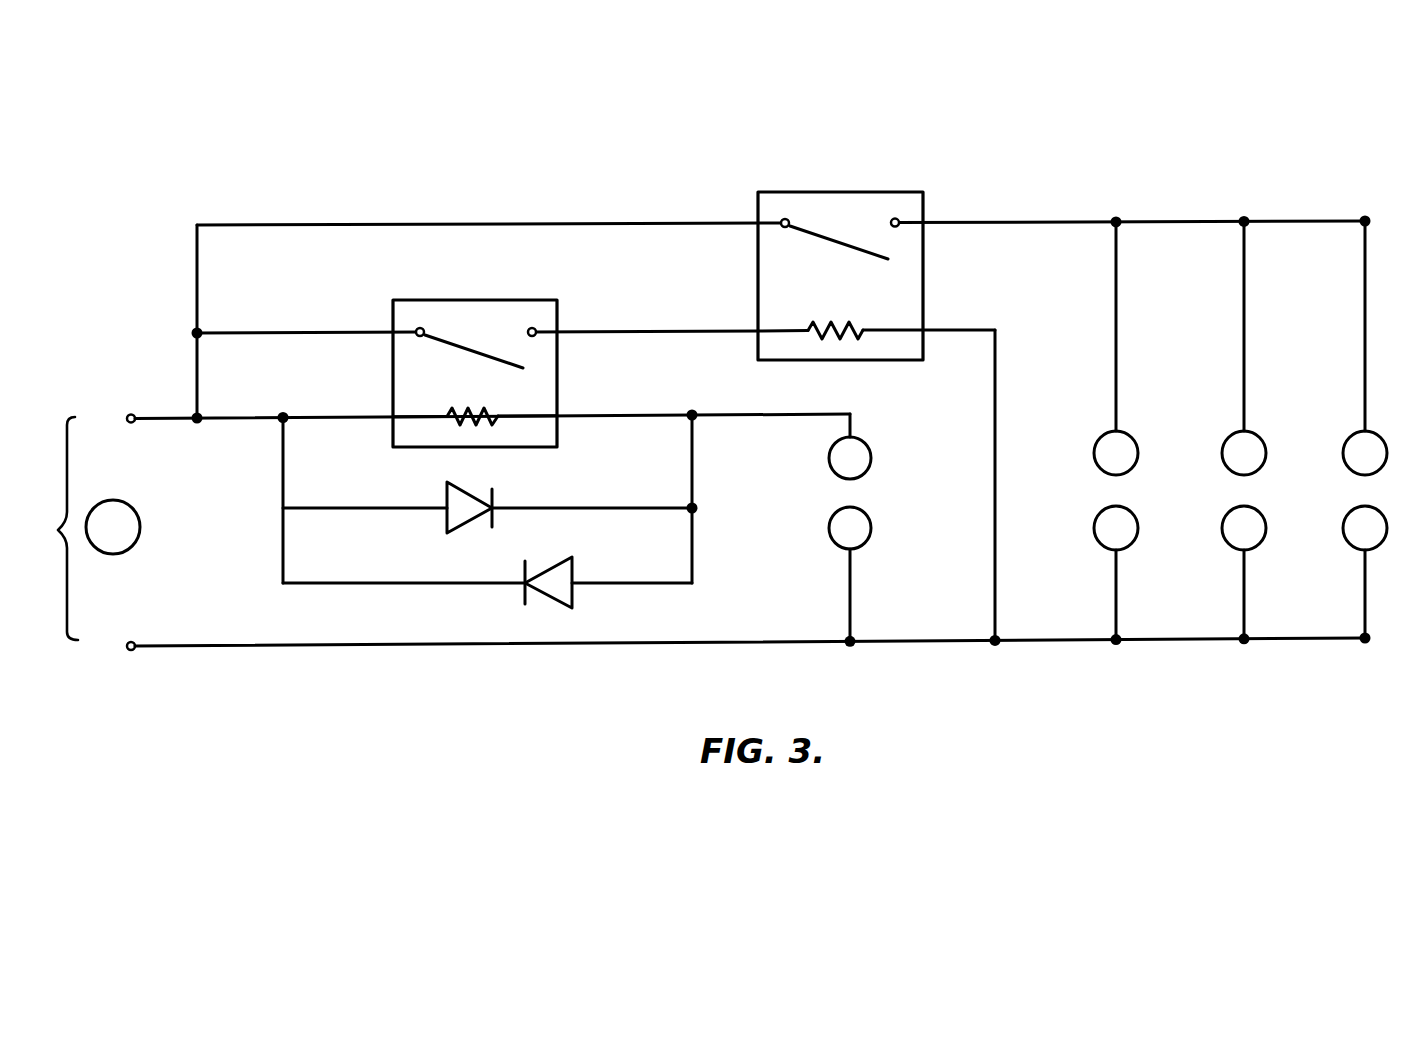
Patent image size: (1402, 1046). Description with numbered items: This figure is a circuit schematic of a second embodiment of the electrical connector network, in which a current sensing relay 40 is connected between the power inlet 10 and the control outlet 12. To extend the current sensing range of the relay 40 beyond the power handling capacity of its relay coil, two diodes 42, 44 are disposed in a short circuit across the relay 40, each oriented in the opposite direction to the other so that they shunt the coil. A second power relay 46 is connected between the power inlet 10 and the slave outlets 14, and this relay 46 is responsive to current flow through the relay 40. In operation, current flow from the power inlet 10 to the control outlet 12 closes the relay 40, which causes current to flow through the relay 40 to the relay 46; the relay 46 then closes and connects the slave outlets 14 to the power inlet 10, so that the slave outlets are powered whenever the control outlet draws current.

The power inlet 10 is at (85, 528).
The control outlet 12 is at (867, 474).
The slave outlets 14 is at (1225, 438).
The current sensing relay 40 is at (557, 392).
The diode 42 is at (447, 494).
The diode 44 is at (550, 569).
The second power relay 46 is at (923, 300).